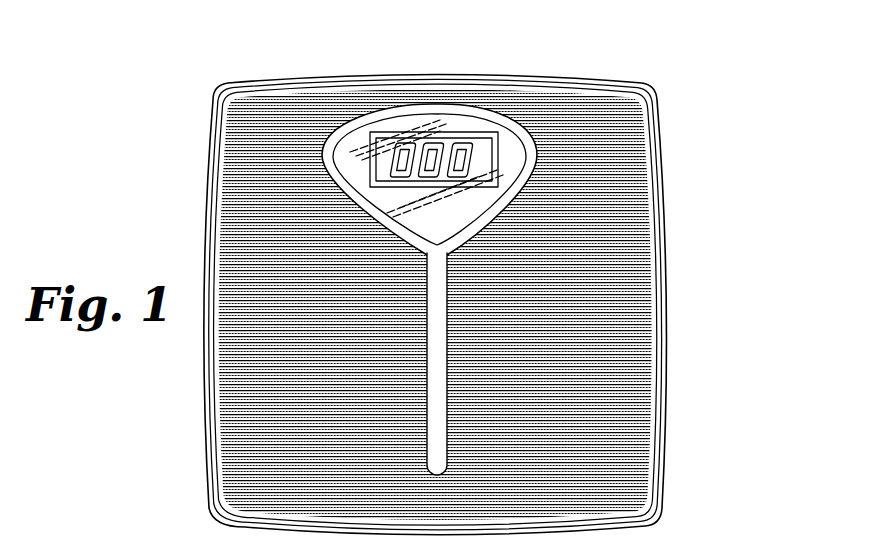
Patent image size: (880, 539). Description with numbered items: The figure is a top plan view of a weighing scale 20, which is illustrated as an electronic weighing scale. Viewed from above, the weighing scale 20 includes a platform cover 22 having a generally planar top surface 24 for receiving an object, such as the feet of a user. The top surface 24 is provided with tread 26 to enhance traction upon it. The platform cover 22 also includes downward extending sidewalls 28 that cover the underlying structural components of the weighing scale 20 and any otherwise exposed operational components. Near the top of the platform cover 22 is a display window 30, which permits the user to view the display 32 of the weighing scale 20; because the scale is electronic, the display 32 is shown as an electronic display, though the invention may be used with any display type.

The weighing scale 20 is at (679, 33).
The platform cover 22 is at (259, 76).
The top surface 24 is at (278, 152).
The tread 26 is at (600, 148).
The sidewalls 28 is at (309, 74).
The display window 30 is at (514, 120).
The display 32 is at (448, 132).